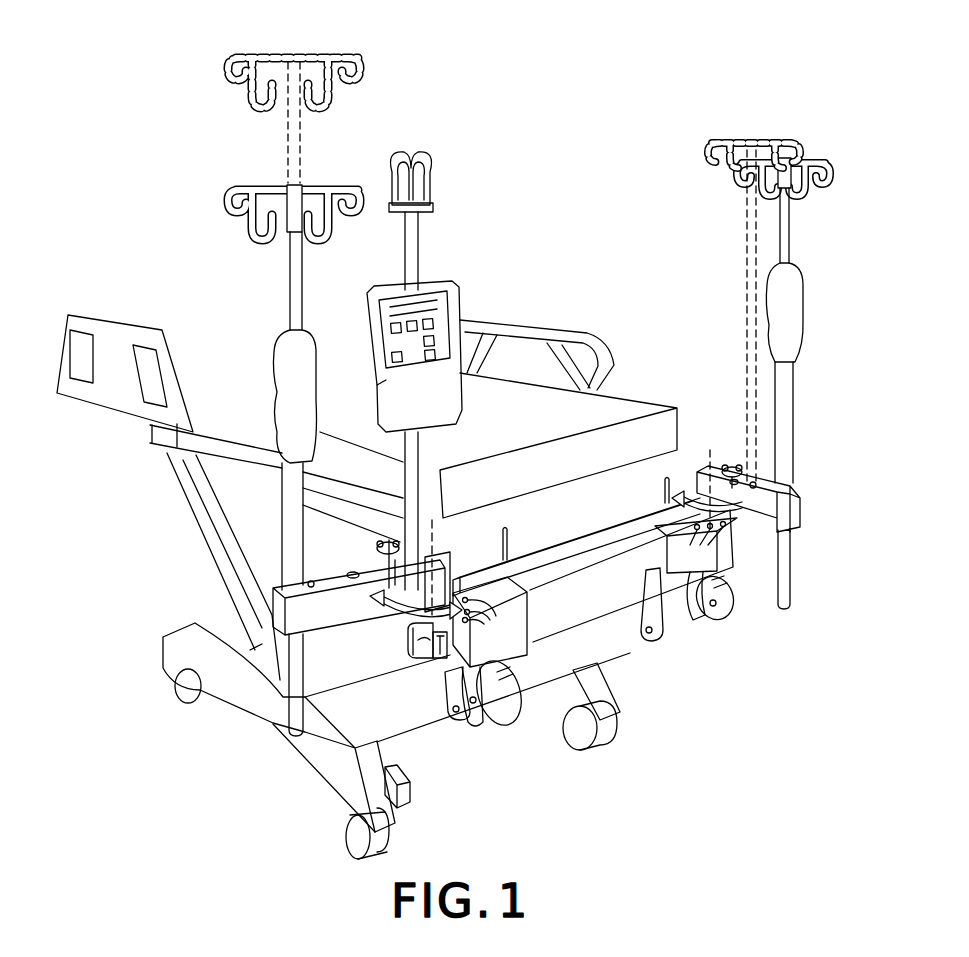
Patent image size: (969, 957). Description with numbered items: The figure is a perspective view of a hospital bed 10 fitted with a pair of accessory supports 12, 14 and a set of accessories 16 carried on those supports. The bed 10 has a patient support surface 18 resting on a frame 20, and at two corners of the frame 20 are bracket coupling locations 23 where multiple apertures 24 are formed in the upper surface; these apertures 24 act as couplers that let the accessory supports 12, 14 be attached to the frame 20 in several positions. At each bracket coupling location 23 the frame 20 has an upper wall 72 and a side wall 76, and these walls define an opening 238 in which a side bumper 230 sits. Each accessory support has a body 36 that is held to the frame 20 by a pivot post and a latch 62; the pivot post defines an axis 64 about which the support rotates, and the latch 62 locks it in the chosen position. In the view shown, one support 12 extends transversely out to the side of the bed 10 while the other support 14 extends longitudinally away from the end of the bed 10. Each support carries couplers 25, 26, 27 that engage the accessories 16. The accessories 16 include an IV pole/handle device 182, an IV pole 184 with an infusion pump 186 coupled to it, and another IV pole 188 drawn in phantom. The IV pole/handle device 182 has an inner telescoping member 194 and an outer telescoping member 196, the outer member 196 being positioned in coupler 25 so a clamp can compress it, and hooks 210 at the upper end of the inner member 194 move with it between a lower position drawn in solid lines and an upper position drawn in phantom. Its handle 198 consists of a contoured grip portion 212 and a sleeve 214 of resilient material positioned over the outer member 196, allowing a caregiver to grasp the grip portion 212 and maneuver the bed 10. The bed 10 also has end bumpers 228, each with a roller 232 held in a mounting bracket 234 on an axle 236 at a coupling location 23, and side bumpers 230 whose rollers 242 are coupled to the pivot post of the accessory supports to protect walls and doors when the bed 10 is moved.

The hospital bed 10 is at (580, 154).
The accessory support 12 is at (329, 660).
The accessory support 14 is at (807, 479).
The accessory 16 is at (265, 298).
The patient support surface 18 is at (610, 408).
The frame 20 is at (622, 573).
The bracket coupling location 23 is at (500, 590).
The aperture 24 is at (556, 571).
The coupler 25 is at (312, 580).
The coupler 26 is at (349, 572).
The coupler 27 is at (452, 532).
The body 36 is at (340, 614).
The latch 62 is at (388, 538).
The axis 64 is at (438, 574).
The upper wall 72 is at (510, 594).
The side wall 76 is at (528, 628).
The IV pole/handle device 182 is at (268, 272).
The IV pole 184 is at (418, 253).
The infusion pump 186 is at (443, 320).
The IV pole 188 is at (741, 236).
The inner telescoping member 194 is at (310, 142).
The outer telescoping member 196 is at (287, 717).
The handle 198 is at (280, 394).
The hooks 210 is at (308, 57).
The grip portion 212 is at (271, 452).
The sleeve 214 is at (287, 527).
The end bumper 228 is at (500, 736).
The side bumper 230 is at (408, 666).
The roller 232 is at (483, 718).
The mounting bracket 234 is at (498, 690).
The axle 236 is at (470, 712).
The opening 238 is at (437, 659).
The roller 242 is at (409, 641).